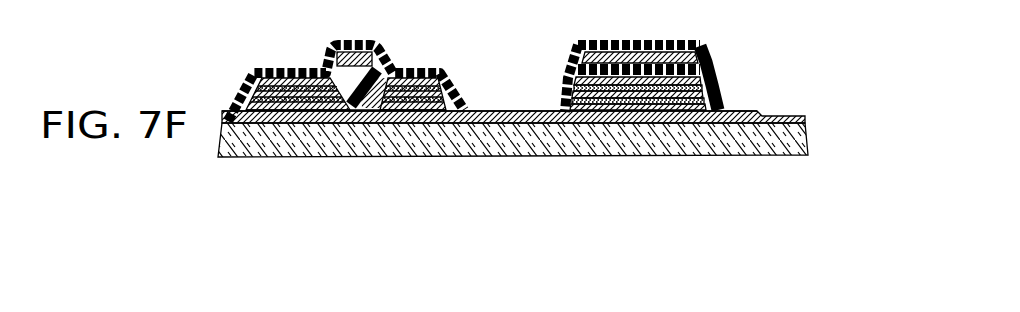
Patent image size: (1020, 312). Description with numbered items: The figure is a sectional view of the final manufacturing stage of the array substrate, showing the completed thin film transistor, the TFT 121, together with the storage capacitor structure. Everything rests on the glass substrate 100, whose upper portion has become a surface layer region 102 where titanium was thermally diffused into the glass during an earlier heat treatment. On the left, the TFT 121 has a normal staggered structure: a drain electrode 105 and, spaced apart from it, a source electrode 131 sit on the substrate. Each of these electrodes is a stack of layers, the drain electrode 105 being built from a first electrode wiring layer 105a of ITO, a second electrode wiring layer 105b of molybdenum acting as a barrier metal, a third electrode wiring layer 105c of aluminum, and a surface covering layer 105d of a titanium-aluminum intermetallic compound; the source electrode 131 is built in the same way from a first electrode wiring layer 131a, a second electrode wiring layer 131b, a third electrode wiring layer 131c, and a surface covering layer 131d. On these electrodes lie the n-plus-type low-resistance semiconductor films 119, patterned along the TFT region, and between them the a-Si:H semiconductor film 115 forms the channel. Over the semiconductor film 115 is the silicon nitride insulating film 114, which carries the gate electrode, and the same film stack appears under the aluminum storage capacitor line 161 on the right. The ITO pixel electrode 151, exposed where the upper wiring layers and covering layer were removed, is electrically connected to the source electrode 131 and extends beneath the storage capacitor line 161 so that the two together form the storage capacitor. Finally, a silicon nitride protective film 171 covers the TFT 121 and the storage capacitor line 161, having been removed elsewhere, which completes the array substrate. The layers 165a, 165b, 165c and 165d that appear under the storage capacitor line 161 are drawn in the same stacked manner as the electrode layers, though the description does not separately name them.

The glass substrate 100 is at (806, 134).
The surface layer region 102 is at (797, 114).
The drain electrode 105 is at (298, 174).
The first electrode wiring layer 105a is at (259, 88).
The second electrode wiring layer 105b is at (255, 93).
The third electrode wiring layer 105c is at (251, 98).
The surface covering layer 105d is at (247, 103).
The insulating film 114 is at (672, 72).
The semiconductor film 115 is at (356, 118).
The low-resistance semiconductor film 119 is at (259, 68).
The TFT 121 is at (379, 229).
The source electrode 131 is at (471, 172).
The first electrode wiring layer 131a is at (393, 108).
The second electrode wiring layer 131b is at (405, 100).
The third electrode wiring layer 131c is at (413, 92).
The surface covering layer 131d is at (425, 85).
The pixel electrode 151 is at (542, 118).
The storage capacitor line 161 is at (627, 50).
The third electrode first layer 165a is at (675, 106).
The third electrode second layer 165b is at (632, 98).
The third electrode third layer 165c is at (610, 95).
The third electrode fourth layer 165d is at (590, 82).
The protective film 171 is at (381, 64).